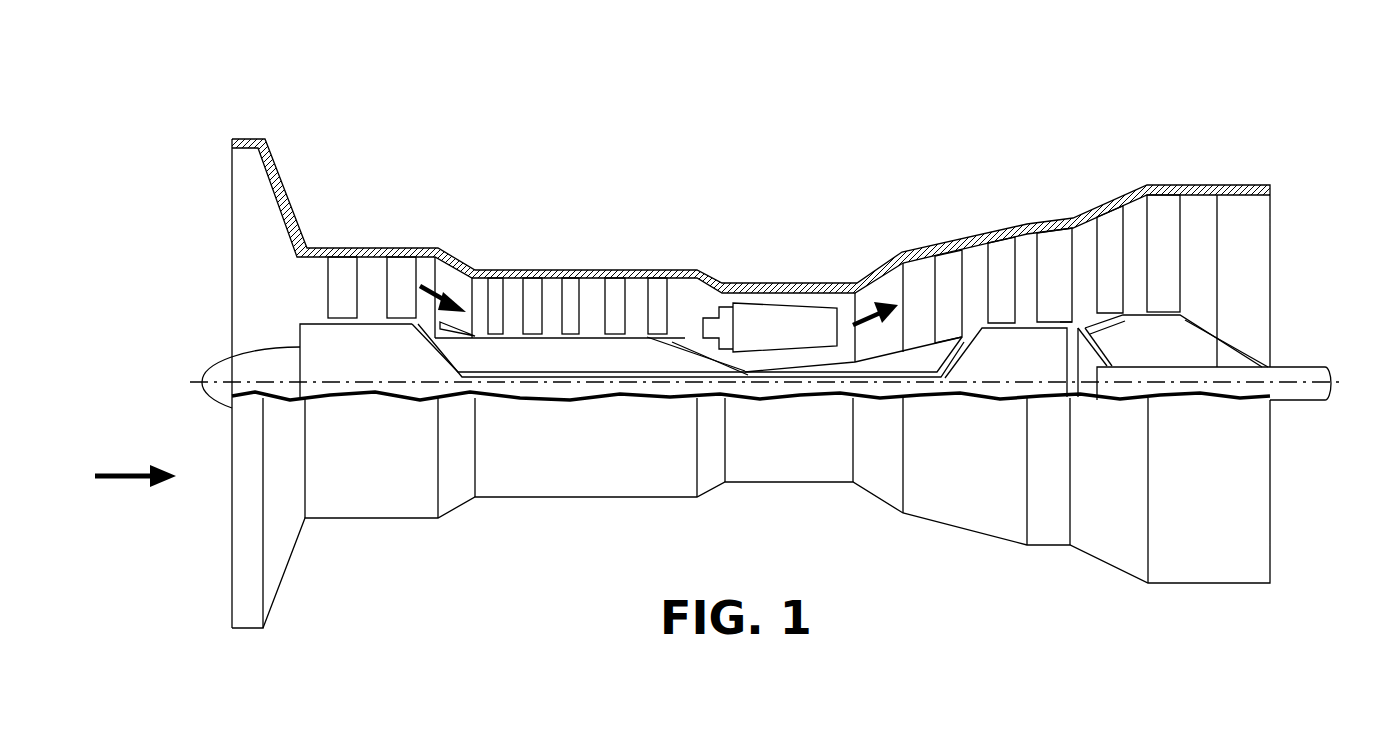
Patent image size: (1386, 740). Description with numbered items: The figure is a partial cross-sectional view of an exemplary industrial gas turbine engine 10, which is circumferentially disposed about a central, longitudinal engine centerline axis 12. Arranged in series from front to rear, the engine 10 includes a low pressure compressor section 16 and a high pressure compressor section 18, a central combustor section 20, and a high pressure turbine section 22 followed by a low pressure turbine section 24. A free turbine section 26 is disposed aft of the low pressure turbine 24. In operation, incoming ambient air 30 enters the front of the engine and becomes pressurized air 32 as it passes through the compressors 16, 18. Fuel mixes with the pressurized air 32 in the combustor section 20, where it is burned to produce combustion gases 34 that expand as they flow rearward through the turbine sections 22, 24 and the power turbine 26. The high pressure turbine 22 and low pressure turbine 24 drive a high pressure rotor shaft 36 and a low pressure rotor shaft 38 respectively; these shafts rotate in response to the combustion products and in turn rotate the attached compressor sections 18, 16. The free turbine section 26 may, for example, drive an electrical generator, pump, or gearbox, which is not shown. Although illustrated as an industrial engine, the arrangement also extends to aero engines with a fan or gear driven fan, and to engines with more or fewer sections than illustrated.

The industrial gas turbine engine 10 is at (856, 130).
The engine centerline axis 12 is at (185, 378).
The low pressure compressor section 16 is at (366, 230).
The high pressure compressor section 18 is at (607, 246).
The combustor section 20 is at (764, 315).
The high pressure turbine section 22 is at (957, 214).
The low pressure turbine section 24 is at (1066, 200).
The free turbine section 26 is at (1213, 175).
The incoming ambient air 30 is at (133, 460).
The pressurized air 32 is at (446, 290).
The combustion gases 34 is at (864, 306).
The high pressure rotor shaft 36 is at (782, 266).
The low pressure rotor shaft 38 is at (454, 360).